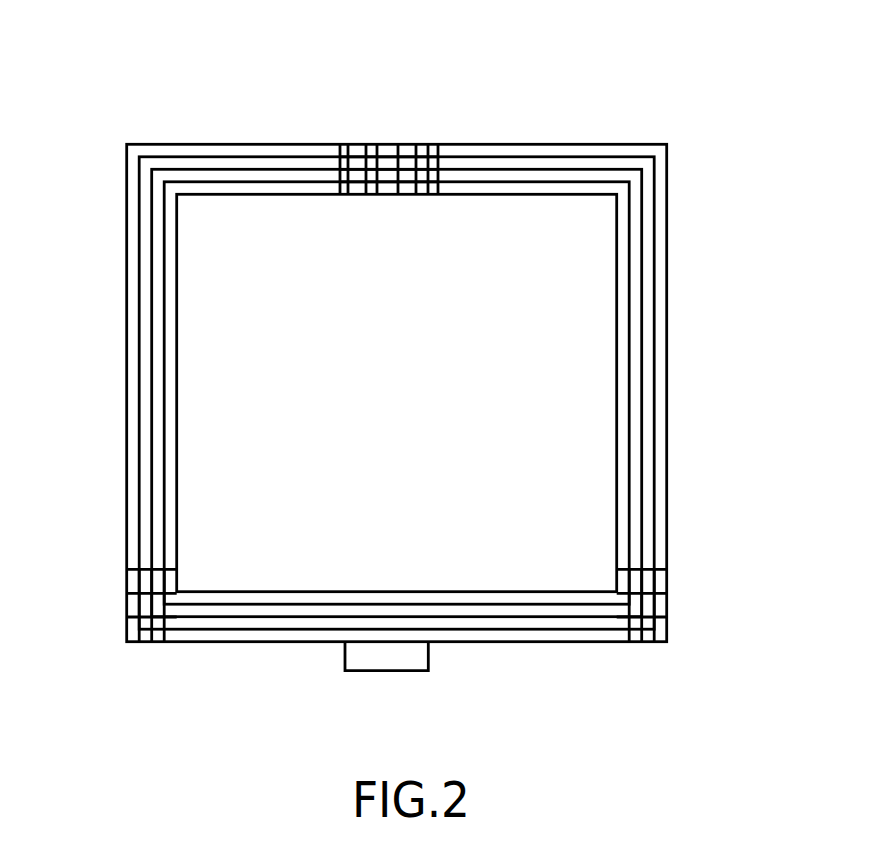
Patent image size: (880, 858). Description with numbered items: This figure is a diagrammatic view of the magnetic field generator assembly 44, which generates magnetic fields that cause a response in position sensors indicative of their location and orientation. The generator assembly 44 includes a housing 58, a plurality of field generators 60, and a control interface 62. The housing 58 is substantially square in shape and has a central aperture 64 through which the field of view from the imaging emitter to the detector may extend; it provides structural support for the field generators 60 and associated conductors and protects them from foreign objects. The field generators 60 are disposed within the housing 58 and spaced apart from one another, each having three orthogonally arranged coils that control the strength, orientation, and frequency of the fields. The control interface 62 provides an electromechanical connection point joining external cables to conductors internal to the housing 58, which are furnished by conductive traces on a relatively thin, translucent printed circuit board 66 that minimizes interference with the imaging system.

The generator assembly 44 is at (123, 118).
The housing 58 is at (133, 377).
The field generators 60 is at (387, 160).
The control interface 62 is at (386, 655).
The central aperture 64 is at (228, 280).
The printed circuit board 66 is at (640, 353).